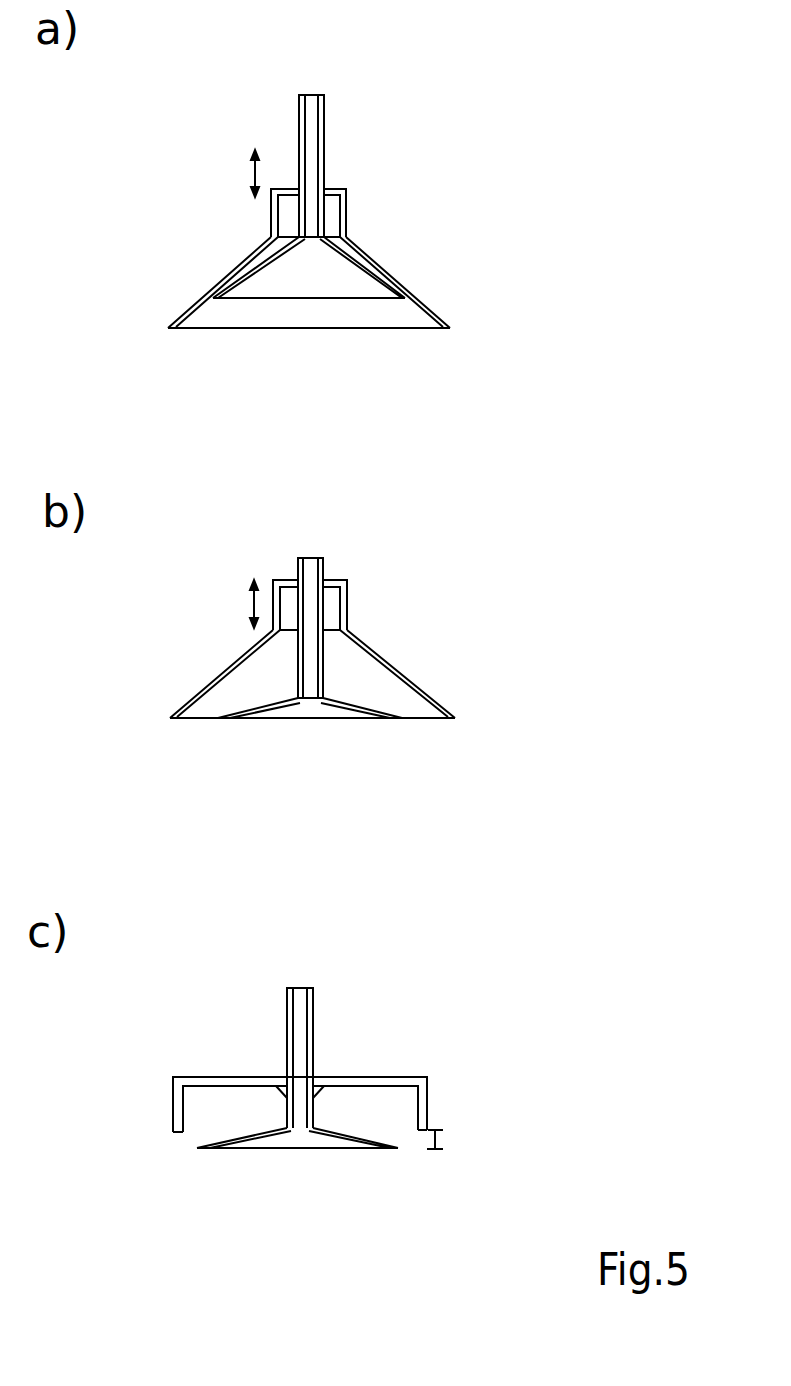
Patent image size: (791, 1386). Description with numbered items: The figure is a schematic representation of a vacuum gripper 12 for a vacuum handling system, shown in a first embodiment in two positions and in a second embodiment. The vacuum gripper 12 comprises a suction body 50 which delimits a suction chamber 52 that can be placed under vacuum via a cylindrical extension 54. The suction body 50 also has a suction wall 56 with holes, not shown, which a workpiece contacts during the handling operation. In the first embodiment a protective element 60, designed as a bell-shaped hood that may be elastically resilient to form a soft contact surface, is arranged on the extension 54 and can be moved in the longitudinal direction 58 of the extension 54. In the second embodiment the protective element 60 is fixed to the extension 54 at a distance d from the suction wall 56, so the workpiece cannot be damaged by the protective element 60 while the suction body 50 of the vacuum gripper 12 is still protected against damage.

The vacuum gripper 12 is at (486, 135).
The suction body 50 is at (380, 280).
The suction chamber 52 is at (268, 274).
The cylindrical extension 54 is at (323, 110).
The suction wall 56 is at (323, 300).
The longitudinal direction 58 is at (252, 600).
The protective element 60 is at (443, 320).
The distance d is at (443, 1142).